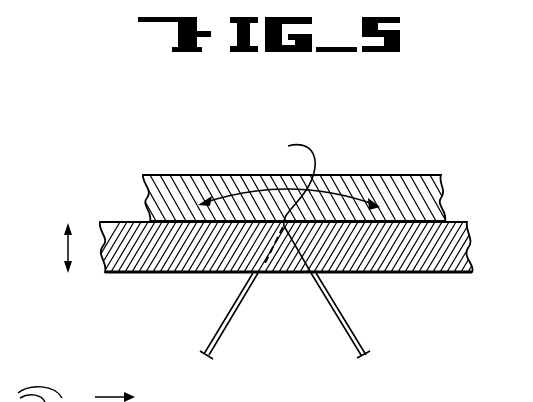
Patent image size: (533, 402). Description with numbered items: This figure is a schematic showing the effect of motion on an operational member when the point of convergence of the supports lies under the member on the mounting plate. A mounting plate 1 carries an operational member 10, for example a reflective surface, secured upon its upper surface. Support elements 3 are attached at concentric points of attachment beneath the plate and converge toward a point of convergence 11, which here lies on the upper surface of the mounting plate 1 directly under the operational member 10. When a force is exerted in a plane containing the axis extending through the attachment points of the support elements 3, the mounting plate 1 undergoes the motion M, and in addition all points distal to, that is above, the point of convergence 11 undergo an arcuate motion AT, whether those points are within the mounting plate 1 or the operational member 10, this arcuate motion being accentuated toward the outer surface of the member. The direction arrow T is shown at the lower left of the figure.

The mounting plate 1 is at (460, 257).
The support elements 3 is at (228, 324).
The operational member 10 is at (424, 208).
The point of convergence 11 is at (289, 204).
The arcuate motion AT is at (348, 190).
The motion M is at (52, 248).
The direction arrow T is at (71, 394).